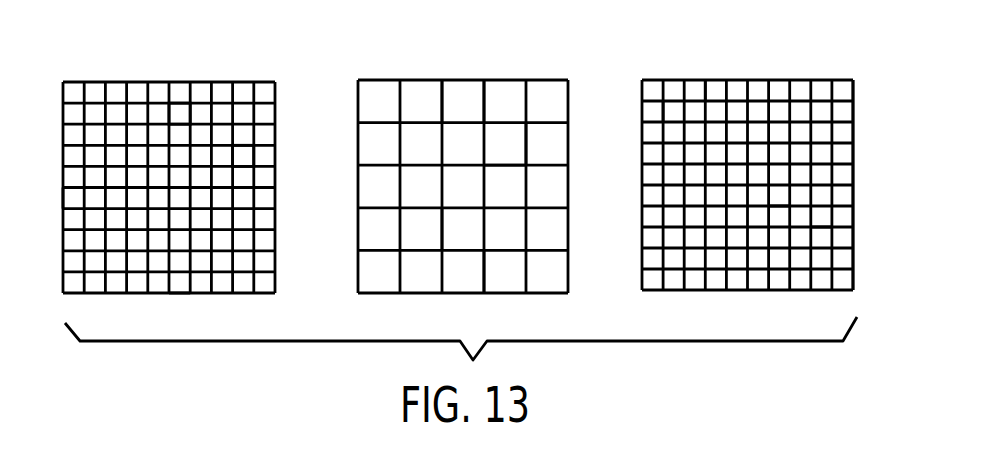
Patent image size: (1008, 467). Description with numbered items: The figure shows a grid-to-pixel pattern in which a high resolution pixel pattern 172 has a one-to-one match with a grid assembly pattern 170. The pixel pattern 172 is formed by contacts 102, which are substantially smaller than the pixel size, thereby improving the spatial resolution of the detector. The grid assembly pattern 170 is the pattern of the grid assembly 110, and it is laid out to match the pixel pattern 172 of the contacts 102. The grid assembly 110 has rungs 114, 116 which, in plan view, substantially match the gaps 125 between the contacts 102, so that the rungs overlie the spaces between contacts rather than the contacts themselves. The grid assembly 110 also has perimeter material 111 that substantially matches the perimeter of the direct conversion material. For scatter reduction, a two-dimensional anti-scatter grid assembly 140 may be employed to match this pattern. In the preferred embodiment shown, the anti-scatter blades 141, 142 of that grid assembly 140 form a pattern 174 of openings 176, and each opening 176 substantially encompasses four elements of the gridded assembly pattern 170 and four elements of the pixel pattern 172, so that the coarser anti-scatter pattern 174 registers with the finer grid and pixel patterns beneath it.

The contacts 102 is at (178, 108).
The grid assembly 110 is at (820, 78).
The perimeter material 111 is at (855, 108).
The rung 114 is at (673, 118).
The rung 116 is at (780, 213).
The gaps 125 is at (62, 198).
The two-dimensional anti-scatter grid assembly 140 is at (376, 72).
The anti-scatter blade 141 is at (525, 103).
The anti-scatter blade 142 is at (423, 210).
The grid assembly pattern 170 is at (789, 43).
The pixel pattern 172 is at (266, 54).
The pattern of openings 174 is at (540, 48).
The openings 176 is at (545, 145).